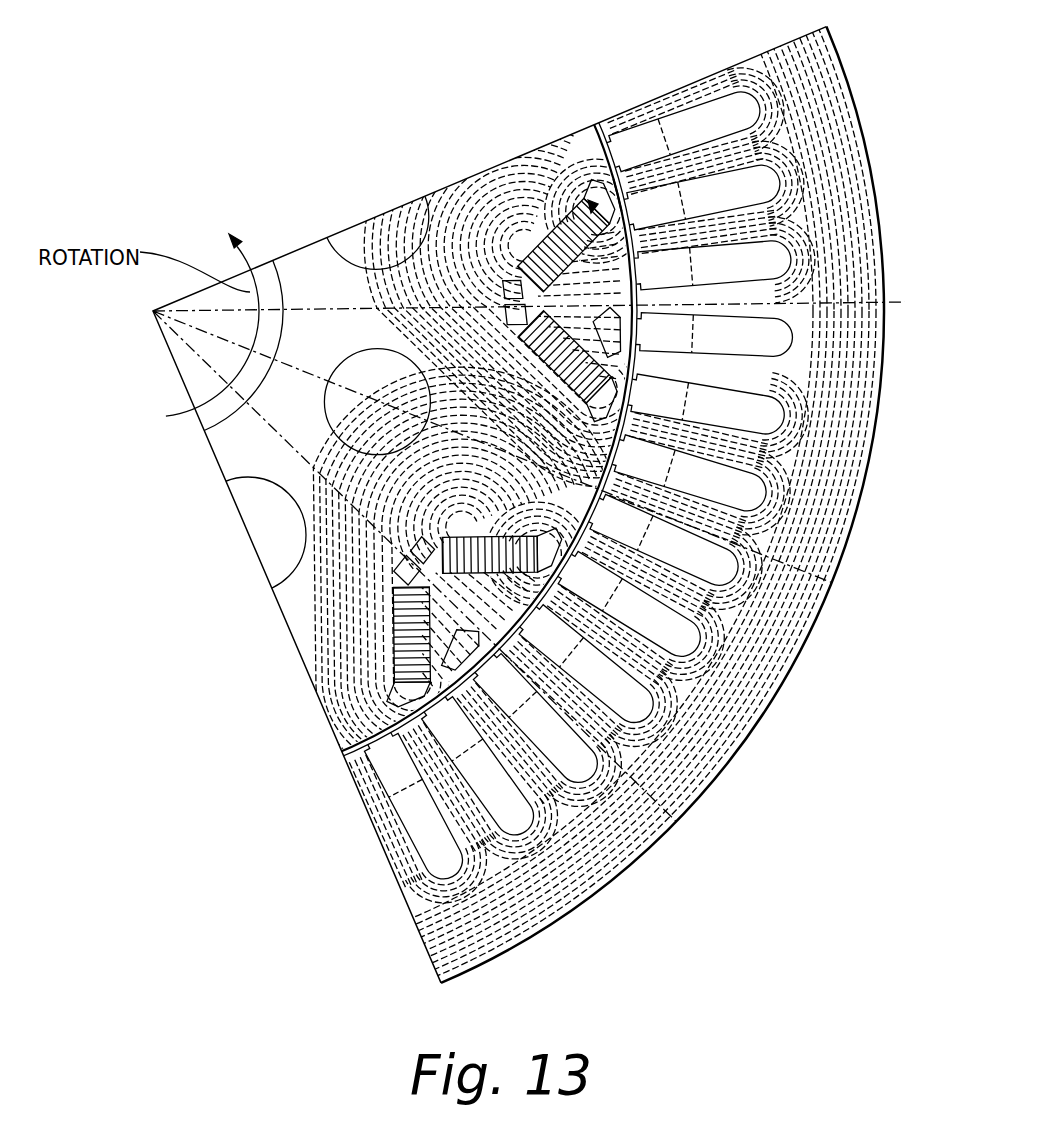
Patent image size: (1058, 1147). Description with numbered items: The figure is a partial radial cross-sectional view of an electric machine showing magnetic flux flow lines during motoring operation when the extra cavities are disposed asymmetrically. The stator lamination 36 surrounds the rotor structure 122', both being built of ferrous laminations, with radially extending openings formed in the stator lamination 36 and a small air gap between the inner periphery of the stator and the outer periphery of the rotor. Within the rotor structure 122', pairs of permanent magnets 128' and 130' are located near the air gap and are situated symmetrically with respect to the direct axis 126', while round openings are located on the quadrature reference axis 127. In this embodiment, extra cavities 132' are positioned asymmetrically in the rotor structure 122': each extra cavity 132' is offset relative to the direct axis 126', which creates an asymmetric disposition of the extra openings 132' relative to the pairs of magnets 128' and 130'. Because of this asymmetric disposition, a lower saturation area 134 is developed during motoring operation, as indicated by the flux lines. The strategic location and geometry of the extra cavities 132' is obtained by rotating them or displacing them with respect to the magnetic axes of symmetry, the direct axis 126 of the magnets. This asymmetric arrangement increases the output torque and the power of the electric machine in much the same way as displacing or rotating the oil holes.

The stator lamination 36 is at (852, 92).
The rotor structure 122' is at (316, 395).
The direct axis 126 is at (438, 517).
The direct axis 126' is at (639, 474).
The quadrature reference axis 127 is at (206, 446).
The permanent magnet 128' is at (478, 421).
The permanent magnet 130' is at (311, 378).
The extra cavity 132' is at (545, 449).
The lower saturation area 134 is at (590, 205).